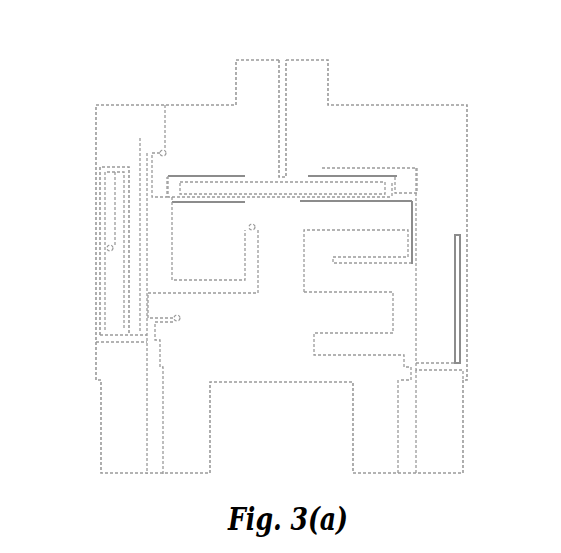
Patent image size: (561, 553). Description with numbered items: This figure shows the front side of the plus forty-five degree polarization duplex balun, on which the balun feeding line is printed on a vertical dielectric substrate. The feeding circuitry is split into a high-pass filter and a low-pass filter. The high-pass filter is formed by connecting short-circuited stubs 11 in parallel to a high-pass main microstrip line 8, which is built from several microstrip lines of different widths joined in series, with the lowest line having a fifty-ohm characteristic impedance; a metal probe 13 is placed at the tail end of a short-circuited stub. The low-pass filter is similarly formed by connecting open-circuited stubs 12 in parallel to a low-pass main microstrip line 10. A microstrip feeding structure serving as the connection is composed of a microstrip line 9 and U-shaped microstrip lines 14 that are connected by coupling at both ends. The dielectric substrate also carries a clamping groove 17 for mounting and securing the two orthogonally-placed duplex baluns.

The high-pass main microstrip line 8 is at (162, 218).
The microstrip line 9 is at (285, 187).
The low-pass main microstrip line 10 is at (413, 203).
The short-circuited stub 11 is at (148, 168).
The open-circuited stub 12 is at (352, 342).
The metal probe 13 is at (165, 127).
The U-shaped microstrip line 14 is at (377, 175).
The clamping groove 17 is at (281, 103).